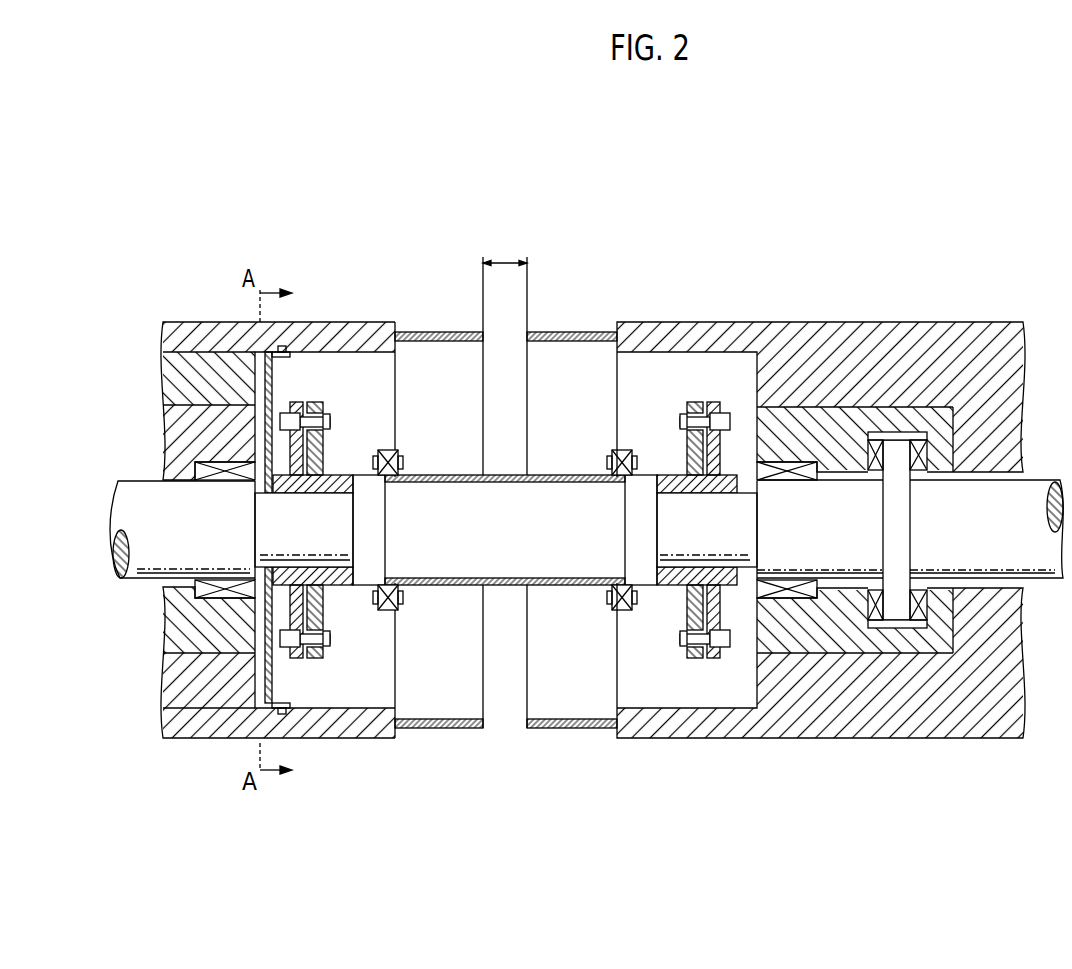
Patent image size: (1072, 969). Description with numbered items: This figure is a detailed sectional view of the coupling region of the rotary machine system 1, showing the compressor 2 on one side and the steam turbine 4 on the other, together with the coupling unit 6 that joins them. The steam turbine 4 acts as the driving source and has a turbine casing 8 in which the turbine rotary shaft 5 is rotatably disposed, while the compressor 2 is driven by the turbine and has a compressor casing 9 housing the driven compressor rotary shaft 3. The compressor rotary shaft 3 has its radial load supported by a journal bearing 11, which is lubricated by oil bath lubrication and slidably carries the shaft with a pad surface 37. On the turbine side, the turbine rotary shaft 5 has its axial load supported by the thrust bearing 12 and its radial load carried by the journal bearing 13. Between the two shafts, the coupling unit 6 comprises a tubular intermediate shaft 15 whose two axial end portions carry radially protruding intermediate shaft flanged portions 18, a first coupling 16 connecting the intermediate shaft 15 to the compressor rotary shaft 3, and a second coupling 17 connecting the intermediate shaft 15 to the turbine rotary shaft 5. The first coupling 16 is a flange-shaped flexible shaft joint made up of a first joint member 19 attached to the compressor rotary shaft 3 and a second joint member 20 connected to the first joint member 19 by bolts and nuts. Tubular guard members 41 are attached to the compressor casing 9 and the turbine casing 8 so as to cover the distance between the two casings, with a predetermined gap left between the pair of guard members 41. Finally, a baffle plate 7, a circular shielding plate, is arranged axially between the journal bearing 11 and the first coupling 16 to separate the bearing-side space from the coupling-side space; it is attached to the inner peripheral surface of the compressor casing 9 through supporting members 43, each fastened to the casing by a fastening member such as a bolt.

The rotary machine system 1 is at (970, 229).
The compressor 2 is at (276, 468).
The compressor rotary shaft 3 is at (171, 560).
The steam turbine 4 is at (821, 473).
The turbine rotary shaft 5 is at (1030, 567).
The coupling unit 6 is at (505, 465).
The baffle plate 7 is at (275, 388).
The turbine casing 8 is at (790, 323).
The compressor casing 9 is at (185, 323).
The journal bearing 11 is at (212, 598).
The thrust bearing 12 is at (908, 612).
The journal bearing 13 is at (783, 600).
The intermediate shaft 15 is at (508, 570).
The first coupling 16 is at (331, 661).
The second coupling 17 is at (661, 646).
The intermediate shaft flanged portion 18 is at (386, 612).
The first joint member 19 is at (713, 402).
The second joint member 20 is at (324, 447).
The pad surface 37 is at (205, 562).
The guard member 41 is at (437, 350).
The supporting member 43 is at (266, 362).